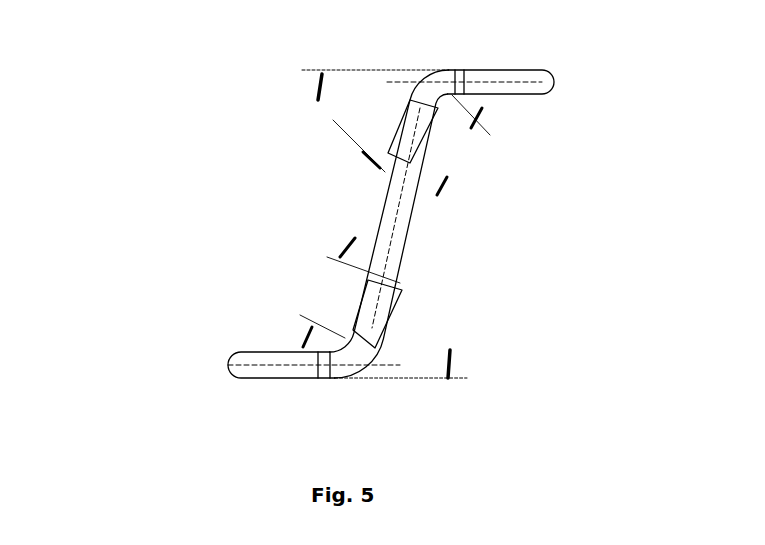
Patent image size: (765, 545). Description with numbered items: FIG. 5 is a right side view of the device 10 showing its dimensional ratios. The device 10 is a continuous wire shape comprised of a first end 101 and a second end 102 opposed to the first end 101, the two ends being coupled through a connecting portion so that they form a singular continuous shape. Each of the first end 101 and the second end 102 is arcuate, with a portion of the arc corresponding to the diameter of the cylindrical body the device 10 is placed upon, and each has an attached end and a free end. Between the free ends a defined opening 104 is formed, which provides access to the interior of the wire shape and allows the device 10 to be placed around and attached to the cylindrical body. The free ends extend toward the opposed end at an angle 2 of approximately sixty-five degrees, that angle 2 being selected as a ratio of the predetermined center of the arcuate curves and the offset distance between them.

The device 10 is at (155, 148).
The angle 2 is at (320, 100).
The first end 101 is at (545, 84).
The second end 102 is at (238, 363).
The opening 104 is at (417, 240).